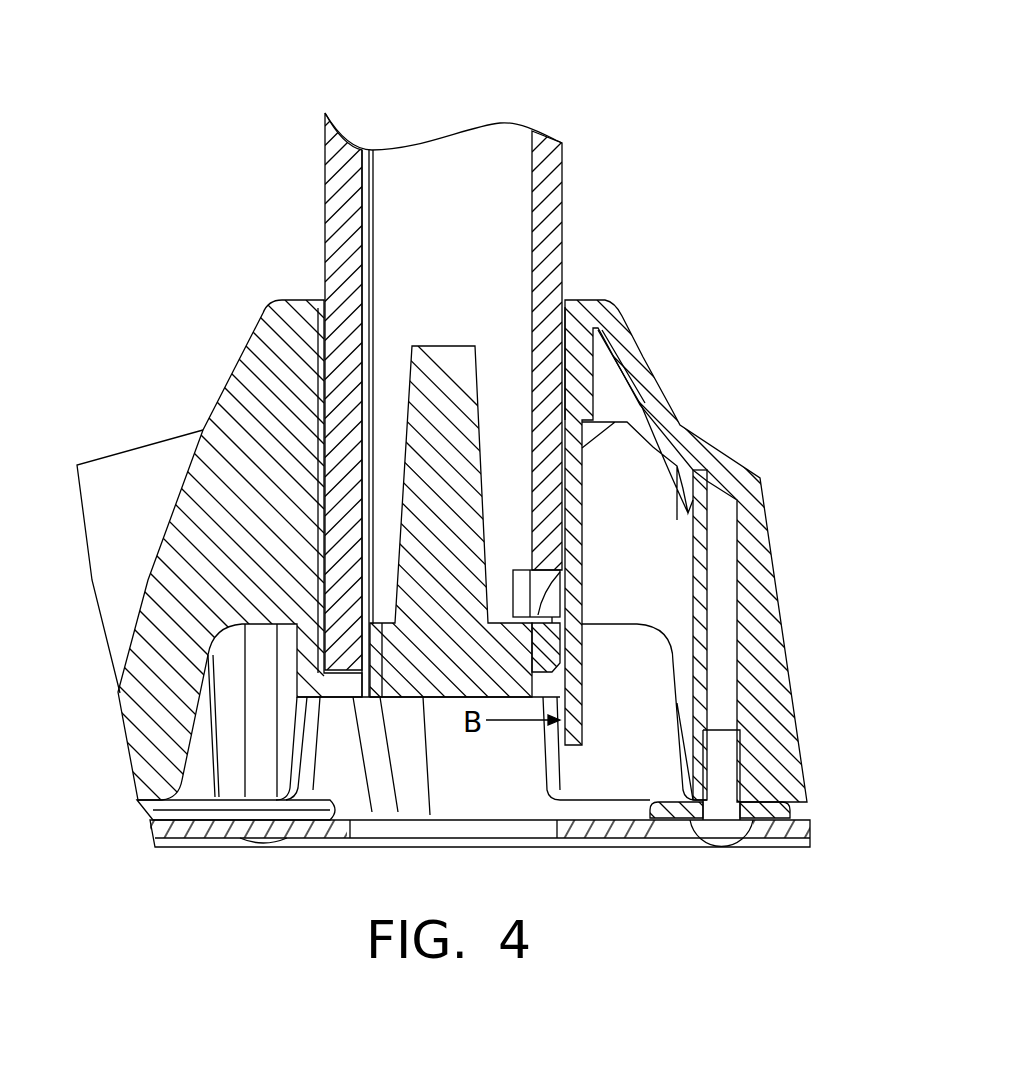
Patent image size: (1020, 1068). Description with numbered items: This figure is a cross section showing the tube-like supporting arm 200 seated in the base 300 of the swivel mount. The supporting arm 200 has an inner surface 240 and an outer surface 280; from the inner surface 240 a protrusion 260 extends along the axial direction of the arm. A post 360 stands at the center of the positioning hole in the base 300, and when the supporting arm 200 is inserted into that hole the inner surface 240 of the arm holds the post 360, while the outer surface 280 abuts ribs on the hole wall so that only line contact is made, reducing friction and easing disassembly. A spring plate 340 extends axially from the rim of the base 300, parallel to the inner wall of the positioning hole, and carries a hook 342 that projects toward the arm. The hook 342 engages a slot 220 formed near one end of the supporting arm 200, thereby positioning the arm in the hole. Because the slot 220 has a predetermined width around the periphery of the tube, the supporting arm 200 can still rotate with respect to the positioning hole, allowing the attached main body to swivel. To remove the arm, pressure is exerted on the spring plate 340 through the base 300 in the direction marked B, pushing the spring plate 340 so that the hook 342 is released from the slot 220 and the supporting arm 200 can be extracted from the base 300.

The supporting arm 200 is at (557, 260).
The slot 220 is at (556, 590).
The inner surface 240 is at (533, 180).
The protrusion 260 is at (371, 150).
The outer surface 280 is at (325, 253).
The base 300 is at (806, 766).
The spring plate 340 is at (580, 530).
The hook 342 is at (546, 607).
The post 360 is at (447, 346).